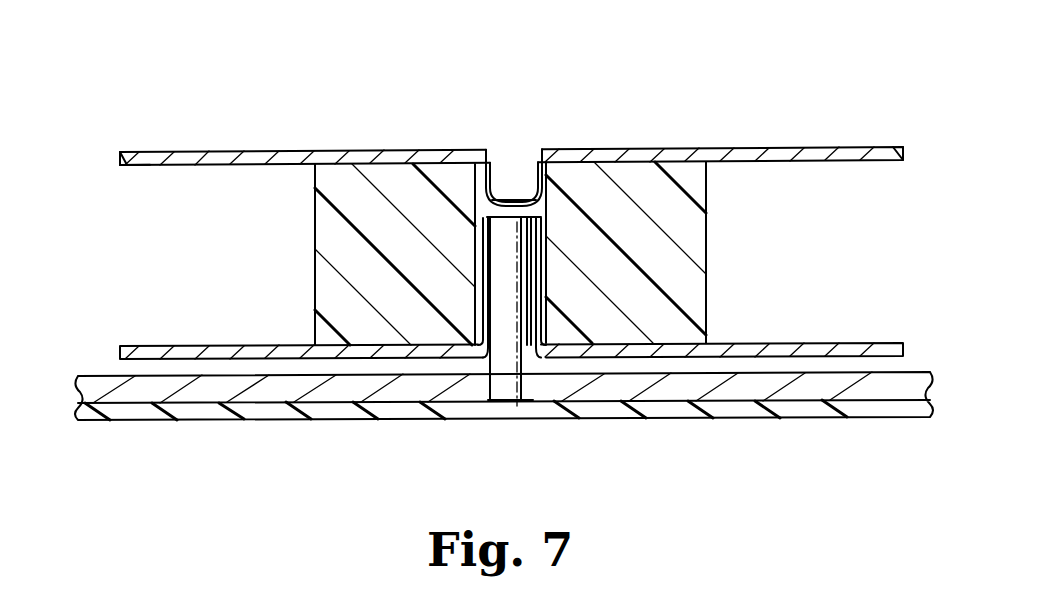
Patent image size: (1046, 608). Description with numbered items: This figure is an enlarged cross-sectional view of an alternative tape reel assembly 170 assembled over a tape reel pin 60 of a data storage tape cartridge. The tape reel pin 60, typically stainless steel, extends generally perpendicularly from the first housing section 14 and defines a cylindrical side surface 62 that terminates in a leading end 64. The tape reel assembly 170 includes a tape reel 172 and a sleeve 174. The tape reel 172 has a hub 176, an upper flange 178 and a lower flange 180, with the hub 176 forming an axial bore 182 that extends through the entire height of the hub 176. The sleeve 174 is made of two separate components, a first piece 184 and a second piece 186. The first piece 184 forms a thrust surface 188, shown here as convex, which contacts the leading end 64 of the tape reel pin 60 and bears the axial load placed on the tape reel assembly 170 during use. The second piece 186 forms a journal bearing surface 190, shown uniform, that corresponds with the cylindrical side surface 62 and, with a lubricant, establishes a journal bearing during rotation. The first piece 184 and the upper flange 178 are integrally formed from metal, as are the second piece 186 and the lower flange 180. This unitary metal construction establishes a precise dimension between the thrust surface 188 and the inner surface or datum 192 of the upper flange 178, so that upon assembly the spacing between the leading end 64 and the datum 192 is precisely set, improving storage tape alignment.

The tape reel assembly 170 is at (205, 74).
The upper flange 178 is at (243, 151).
The datum 192 is at (137, 164).
The first piece 184 is at (492, 166).
The thrust surface 188 is at (520, 204).
The lower flange 180 is at (150, 347).
The journal bearing surface 190 is at (490, 323).
The first housing section 14 is at (217, 412).
The hub 176 is at (320, 294).
The second piece 186 is at (540, 304).
The sleeve 174 is at (552, 206).
The tape reel pin 60 is at (505, 384).
The cylindrical side surface 62 is at (543, 352).
The leading end 64 is at (486, 204).
The axial bore 182 is at (483, 241).
The tape reel 172 is at (262, 262).